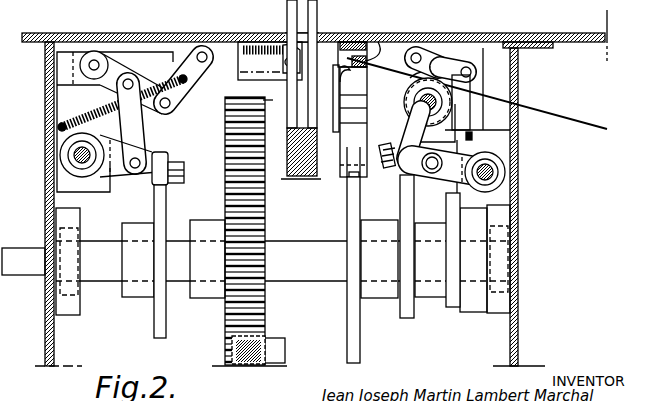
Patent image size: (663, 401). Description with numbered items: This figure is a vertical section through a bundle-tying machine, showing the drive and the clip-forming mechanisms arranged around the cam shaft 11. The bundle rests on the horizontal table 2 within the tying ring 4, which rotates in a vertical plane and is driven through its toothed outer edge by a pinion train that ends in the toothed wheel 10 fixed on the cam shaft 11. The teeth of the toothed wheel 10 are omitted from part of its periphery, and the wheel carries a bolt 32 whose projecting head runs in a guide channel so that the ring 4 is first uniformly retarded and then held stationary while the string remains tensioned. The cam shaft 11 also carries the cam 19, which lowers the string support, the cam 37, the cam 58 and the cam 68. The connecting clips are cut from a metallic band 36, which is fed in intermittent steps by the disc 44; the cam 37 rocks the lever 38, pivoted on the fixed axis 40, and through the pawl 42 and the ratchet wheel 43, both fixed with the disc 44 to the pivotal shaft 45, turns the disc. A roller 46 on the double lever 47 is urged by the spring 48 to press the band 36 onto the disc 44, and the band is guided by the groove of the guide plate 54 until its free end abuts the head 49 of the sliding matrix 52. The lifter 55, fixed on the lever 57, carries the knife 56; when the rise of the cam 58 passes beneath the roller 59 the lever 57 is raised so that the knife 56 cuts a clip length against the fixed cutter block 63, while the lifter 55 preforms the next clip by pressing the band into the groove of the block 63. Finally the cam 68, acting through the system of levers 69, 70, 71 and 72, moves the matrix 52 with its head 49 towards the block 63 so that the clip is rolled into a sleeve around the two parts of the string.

The horizontal table 2 is at (124, 35).
The ring 4 is at (289, 181).
The toothed wheel 10 is at (233, 318).
The cam shaft 11 is at (308, 280).
The cam 19 is at (452, 307).
The bolt 32 is at (285, 350).
The metallic band 36 is at (546, 112).
The cam 37 is at (407, 318).
The lever 38 is at (437, 180).
The fixed axis 40 is at (505, 173).
The pawl 42 is at (405, 128).
The ratchet wheel 43 is at (409, 84).
The disc 44 is at (414, 102).
The pivotal shaft 45 is at (406, 112).
The roller 46 is at (437, 56).
The double lever 47 is at (458, 64).
The spring 48 is at (470, 115).
The head 49 is at (284, 46).
The sliding matrix 52 is at (222, 50).
The guide plate 54 is at (378, 42).
The lifter 55 is at (344, 80).
The knife 56 is at (336, 132).
The lever 57 is at (343, 180).
The cam 58 is at (360, 352).
The roller 59 is at (361, 180).
The cutter block 63 is at (350, 42).
The cam 68 is at (154, 329).
The lever 69 is at (117, 172).
The lever 70 is at (140, 131).
The lever 71 is at (120, 67).
The lever 72 is at (188, 96).